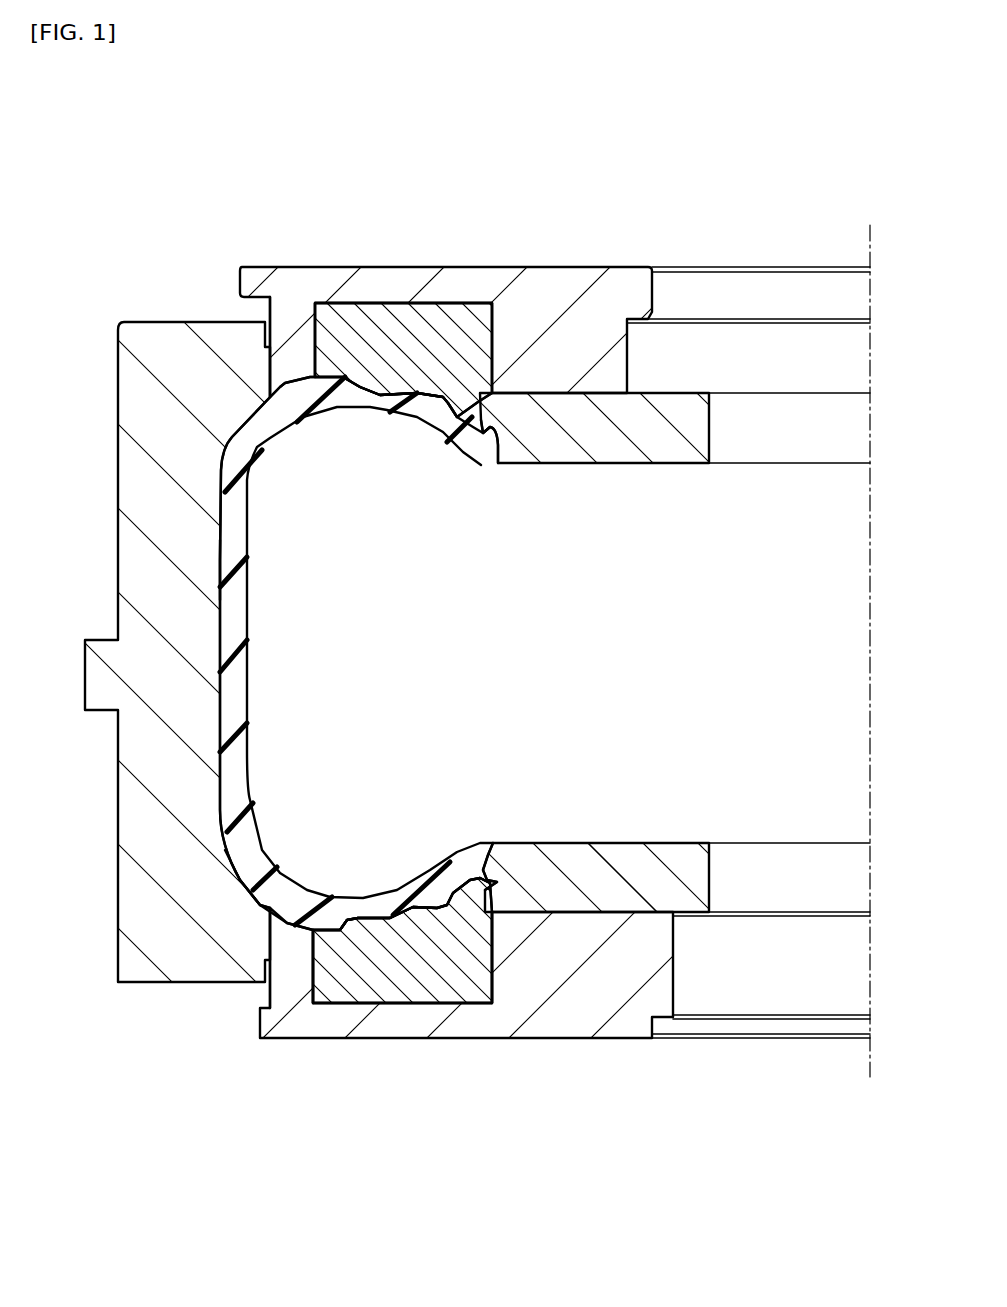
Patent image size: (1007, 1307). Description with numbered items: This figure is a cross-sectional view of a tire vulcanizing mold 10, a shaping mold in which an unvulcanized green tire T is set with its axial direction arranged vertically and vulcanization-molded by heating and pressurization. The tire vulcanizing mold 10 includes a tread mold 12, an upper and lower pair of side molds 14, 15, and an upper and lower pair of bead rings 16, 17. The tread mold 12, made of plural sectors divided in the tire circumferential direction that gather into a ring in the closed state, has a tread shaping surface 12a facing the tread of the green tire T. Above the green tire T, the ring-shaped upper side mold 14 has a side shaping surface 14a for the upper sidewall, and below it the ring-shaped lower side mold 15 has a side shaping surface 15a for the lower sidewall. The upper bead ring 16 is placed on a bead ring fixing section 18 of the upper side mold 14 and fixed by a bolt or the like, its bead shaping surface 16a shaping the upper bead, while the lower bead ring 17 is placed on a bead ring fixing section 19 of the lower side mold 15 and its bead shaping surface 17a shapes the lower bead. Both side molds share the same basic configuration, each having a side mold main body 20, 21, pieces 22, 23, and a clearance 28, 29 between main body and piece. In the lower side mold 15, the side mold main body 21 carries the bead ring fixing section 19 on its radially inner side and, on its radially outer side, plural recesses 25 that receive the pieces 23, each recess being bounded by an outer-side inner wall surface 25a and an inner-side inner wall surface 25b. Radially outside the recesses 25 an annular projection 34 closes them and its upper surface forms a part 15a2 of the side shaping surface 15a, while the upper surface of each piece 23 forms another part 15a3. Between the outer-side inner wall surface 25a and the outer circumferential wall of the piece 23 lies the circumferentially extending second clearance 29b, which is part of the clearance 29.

The tire vulcanizing mold 10 is at (613, 105).
The tread mold 12 is at (140, 577).
The tread shaping surface 12a is at (228, 580).
The upper side mold 14 is at (410, 185).
The side shaping surface 14a is at (372, 390).
The lower side mold 15 is at (395, 1118).
The side shaping surface 15a is at (245, 852).
The part of the side shaping surface 15a2 is at (245, 878).
The part of the side shaping surface 15a3 is at (412, 880).
The upper bead ring 16 is at (667, 468).
The bead shaping surface 16a is at (480, 448).
The lower bead ring 17 is at (648, 843).
The bead shaping surface 17a is at (487, 857).
The bead ring fixing section 18 is at (572, 397).
The bead ring fixing section 19 is at (590, 912).
The side mold main body 20 is at (447, 283).
The side mold main body 21 is at (407, 1020).
The piece 22 is at (403, 340).
The piece 23 is at (473, 960).
The recess 25 is at (368, 312).
The outer-side inner wall surface 25a is at (327, 957).
The inner-side inner wall surface 25b is at (472, 960).
The clearance 28 is at (315, 385).
The clearance 29 is at (314, 874).
The second clearance 29b is at (318, 927).
The annular projection 34 is at (287, 360).
The green tire T is at (242, 690).